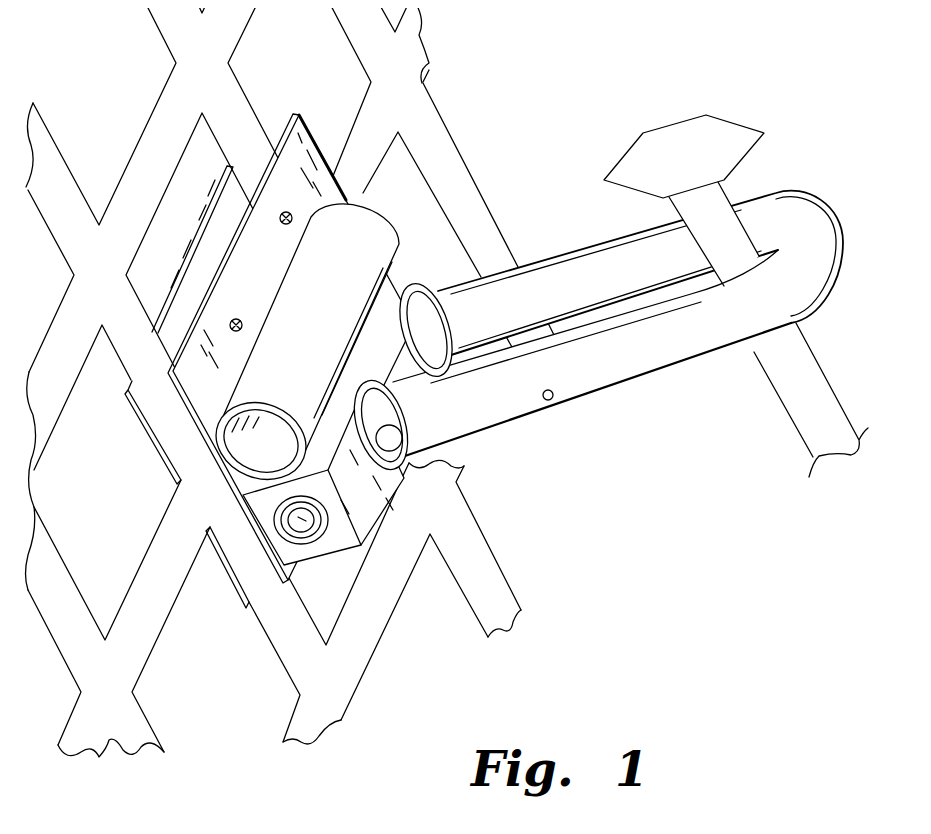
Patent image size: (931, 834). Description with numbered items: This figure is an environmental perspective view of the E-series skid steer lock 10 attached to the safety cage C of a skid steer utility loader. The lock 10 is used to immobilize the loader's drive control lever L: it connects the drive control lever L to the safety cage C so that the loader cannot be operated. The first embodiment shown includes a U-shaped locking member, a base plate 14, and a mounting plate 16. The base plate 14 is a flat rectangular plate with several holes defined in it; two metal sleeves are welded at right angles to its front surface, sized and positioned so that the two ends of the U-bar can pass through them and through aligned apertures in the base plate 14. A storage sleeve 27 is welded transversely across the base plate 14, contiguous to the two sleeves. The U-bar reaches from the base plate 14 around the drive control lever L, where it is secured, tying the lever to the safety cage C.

The safety cage C is at (427, 69).
The drive control lever L is at (720, 132).
The E-series skid steer lock 10 is at (452, 443).
The base plate 14 is at (288, 582).
The mounting plate 16 is at (133, 403).
The storage sleeve 27 is at (365, 225).